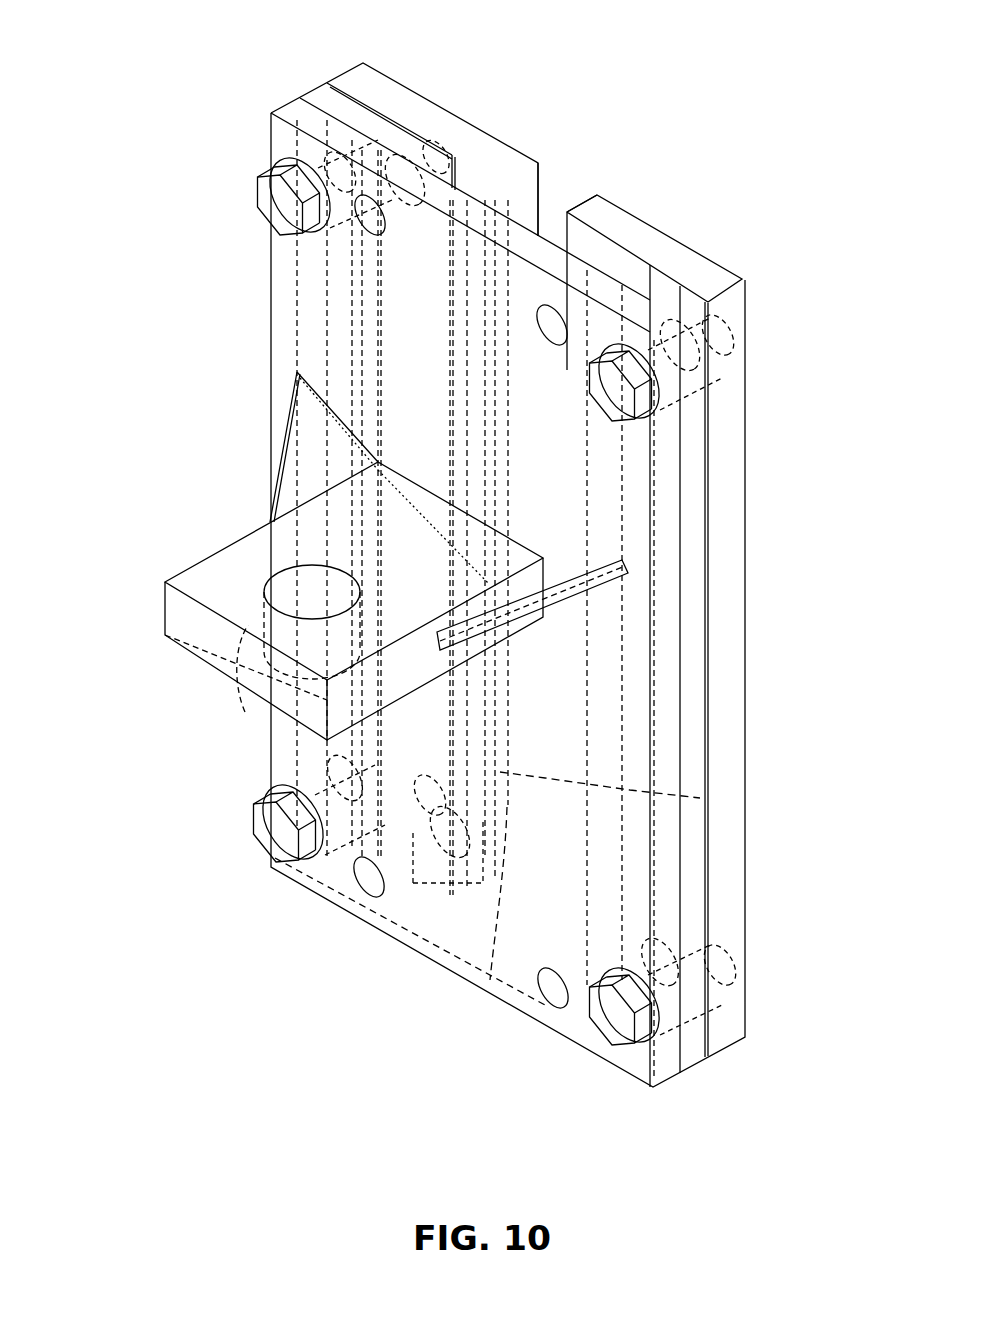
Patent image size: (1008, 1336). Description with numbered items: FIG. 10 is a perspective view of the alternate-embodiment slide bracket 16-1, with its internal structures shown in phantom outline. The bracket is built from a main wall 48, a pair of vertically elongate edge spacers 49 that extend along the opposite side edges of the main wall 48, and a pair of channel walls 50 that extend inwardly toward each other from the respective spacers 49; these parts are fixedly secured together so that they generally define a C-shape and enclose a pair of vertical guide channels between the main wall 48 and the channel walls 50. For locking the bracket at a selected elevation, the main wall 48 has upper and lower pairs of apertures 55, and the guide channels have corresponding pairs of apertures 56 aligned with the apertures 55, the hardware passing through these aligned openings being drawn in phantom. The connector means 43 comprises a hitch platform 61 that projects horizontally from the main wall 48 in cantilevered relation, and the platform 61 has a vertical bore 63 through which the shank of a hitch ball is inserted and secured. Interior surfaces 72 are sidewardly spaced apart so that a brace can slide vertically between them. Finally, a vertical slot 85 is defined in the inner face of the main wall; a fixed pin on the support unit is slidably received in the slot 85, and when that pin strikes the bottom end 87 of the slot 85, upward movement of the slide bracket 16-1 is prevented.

The slide bracket 16-1 is at (770, 289).
The connector means 43 is at (206, 555).
The main wall 48 is at (670, 742).
The edge spacers 49 is at (695, 682).
The channel walls 50 is at (740, 588).
The apertures 55 is at (553, 320).
The apertures 56 is at (510, 125).
The hitch platform 61 is at (170, 604).
The vertical bore 63 is at (245, 716).
The interior surfaces 72 is at (539, 178).
The vertical slot 85 is at (700, 798).
The bottom end 87 is at (490, 980).